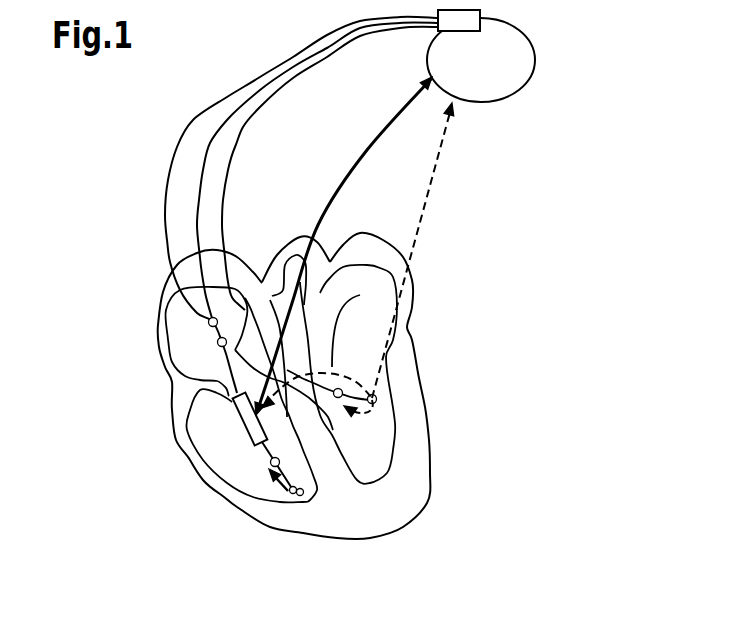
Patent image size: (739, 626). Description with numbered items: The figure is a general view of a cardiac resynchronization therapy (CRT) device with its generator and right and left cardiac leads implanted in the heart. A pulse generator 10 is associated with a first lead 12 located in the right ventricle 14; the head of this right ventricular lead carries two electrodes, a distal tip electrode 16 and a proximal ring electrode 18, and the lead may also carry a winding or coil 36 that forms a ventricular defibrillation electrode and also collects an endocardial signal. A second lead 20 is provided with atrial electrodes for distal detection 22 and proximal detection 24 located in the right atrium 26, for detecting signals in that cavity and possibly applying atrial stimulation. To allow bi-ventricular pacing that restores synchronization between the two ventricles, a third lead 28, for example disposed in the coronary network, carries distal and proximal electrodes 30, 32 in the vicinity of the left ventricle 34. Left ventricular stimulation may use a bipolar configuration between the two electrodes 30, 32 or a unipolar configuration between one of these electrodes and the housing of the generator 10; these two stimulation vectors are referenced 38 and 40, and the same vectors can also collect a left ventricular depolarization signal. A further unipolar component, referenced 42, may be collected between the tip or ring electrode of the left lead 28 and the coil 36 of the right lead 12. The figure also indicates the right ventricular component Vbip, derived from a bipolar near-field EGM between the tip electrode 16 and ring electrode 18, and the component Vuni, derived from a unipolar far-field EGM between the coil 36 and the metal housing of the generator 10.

The pulse generator 10 is at (527, 58).
The first lead 12 is at (189, 126).
The right ventricle 14 is at (232, 437).
The distal electrode (tip) 16 is at (313, 490).
The proximal electrode (ring) 18 is at (271, 463).
The second lead 20 is at (202, 173).
The atrial electrode for distal detection 22 is at (218, 342).
The atrial electrode for proximal detection 24 is at (209, 323).
The right atrium 26 is at (212, 370).
The third lead 28 is at (237, 142).
The distal electrode (tip electrode) of left lead 30 is at (377, 399).
The proximal electrode (ring electrode) of left lead 32 is at (385, 338).
The left ventricle 34 is at (385, 472).
The winding (coil) 36 is at (260, 437).
The bipolar stimulation vector 38 is at (357, 417).
The unipolar stimulation vector 40 is at (437, 163).
The unipolar component between left lead electrode and right ventricular coil 42 is at (360, 295).
The right ventricular unipolar component Vuni is at (359, 160).
The right ventricular bipolar component Vbip is at (265, 493).